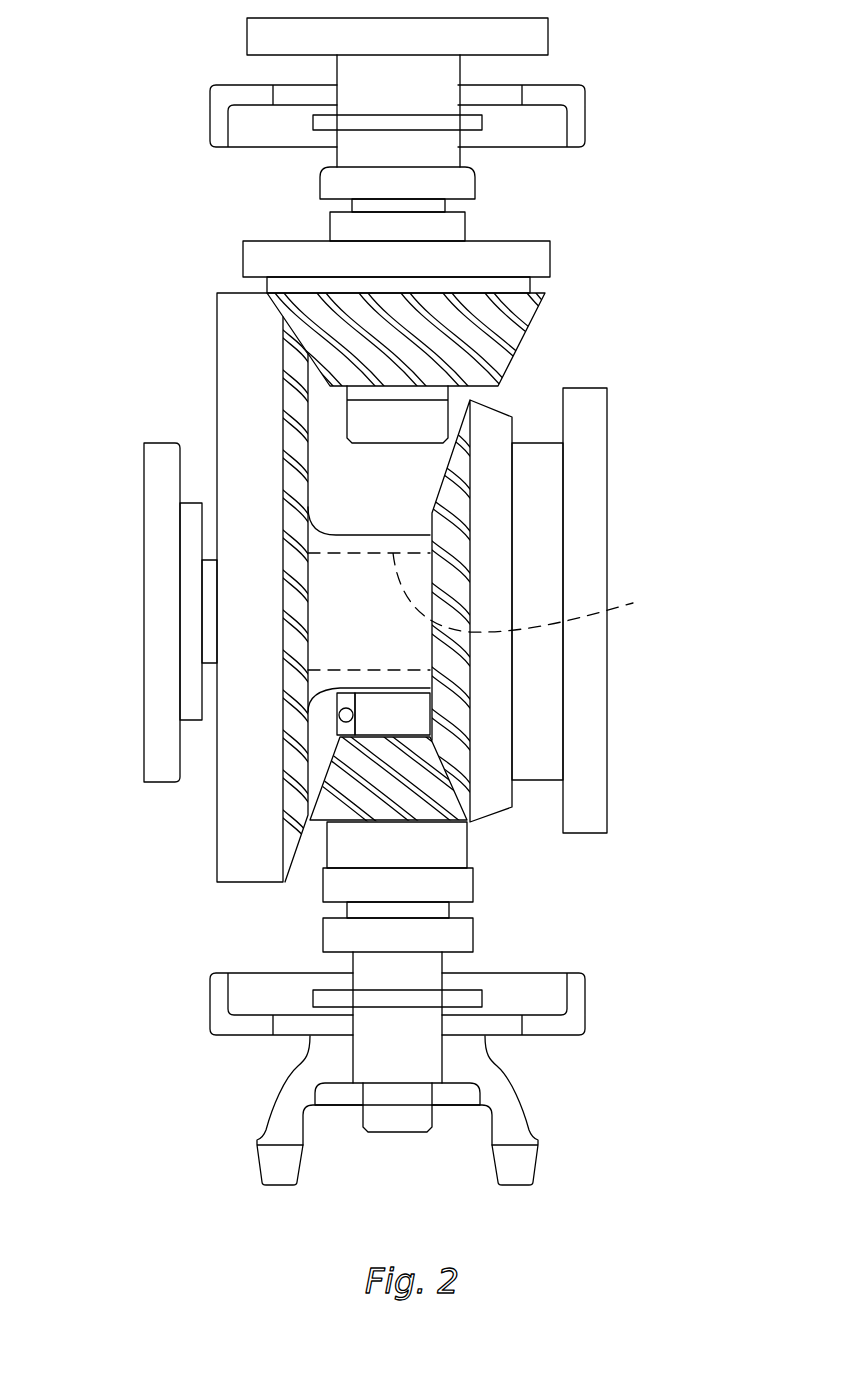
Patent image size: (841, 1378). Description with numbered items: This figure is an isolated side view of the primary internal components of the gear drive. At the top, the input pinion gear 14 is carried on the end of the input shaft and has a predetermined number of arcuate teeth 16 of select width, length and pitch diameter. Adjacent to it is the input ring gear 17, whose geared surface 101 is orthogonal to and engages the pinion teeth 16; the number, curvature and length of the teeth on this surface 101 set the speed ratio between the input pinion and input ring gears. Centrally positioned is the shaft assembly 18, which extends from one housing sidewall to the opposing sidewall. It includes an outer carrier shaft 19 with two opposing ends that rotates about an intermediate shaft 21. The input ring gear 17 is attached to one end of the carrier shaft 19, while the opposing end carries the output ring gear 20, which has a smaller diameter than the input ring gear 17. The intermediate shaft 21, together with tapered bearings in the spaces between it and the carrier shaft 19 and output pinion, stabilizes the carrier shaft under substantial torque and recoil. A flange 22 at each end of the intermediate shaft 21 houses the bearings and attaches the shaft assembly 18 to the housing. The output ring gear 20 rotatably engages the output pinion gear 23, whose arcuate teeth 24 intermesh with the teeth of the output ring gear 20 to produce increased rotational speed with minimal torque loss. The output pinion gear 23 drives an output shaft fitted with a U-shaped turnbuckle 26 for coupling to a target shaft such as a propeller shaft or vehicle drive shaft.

The input pinion gear 14 is at (535, 307).
The arcuate teeth 16 is at (525, 328).
The input ring gear 17 is at (243, 369).
The shaft assembly 18 is at (322, 718).
The outer carrier shaft 19 is at (470, 822).
The output ring gear 20 is at (500, 490).
The intermediate shaft 21 is at (491, 611).
The flange 22 is at (144, 612).
The output pinion gear 23 is at (400, 800).
The arcuate teeth 24 is at (315, 820).
The U-shaped turnbuckle 26 is at (523, 1107).
The geared surface 101 is at (308, 447).